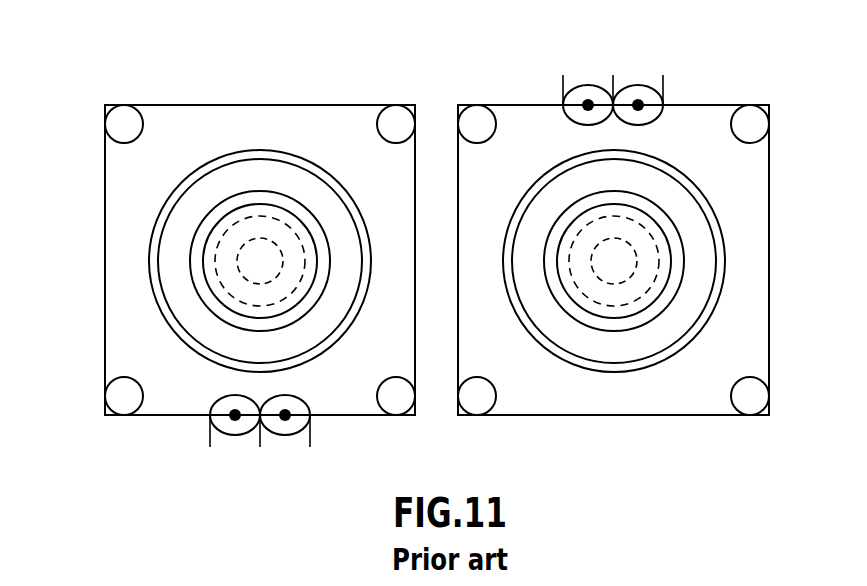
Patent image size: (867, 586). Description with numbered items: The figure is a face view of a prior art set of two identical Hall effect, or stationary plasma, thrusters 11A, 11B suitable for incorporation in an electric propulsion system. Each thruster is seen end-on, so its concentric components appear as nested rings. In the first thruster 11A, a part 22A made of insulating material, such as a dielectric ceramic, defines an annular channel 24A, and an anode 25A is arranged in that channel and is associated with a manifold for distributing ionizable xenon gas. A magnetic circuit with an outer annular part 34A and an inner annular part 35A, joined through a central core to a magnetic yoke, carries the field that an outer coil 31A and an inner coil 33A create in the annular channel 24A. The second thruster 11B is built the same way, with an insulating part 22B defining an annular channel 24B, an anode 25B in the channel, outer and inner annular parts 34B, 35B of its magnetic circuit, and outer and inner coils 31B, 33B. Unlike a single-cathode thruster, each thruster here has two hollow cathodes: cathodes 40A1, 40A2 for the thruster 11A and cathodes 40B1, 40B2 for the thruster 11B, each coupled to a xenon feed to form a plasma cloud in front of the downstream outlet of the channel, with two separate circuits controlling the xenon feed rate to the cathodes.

The Hall effect thruster 11A is at (226, 266).
The Hall effect thruster 11B is at (635, 251).
The part made of insulating material 22A is at (217, 212).
The part made of insulating material 22B is at (658, 308).
The annular channel 24A is at (283, 170).
The annular channel 24B is at (590, 348).
The anode 25A is at (180, 230).
The anode 25B is at (695, 230).
The outer coil 31A is at (125, 127).
The outer coil 31B is at (483, 123).
The inner coil 33A is at (215, 267).
The inner coil 33B is at (662, 267).
The outer annular part of magnetic circuit 34A is at (352, 137).
The outer annular part of magnetic circuit 34B is at (520, 137).
The inner annular part of magnetic circuit 35A is at (230, 247).
The inner annular part of magnetic circuit 35B is at (645, 247).
The cathode 40A1 is at (302, 423).
The cathode 40A2 is at (225, 423).
The cathode 40B1 is at (592, 92).
The cathode 40B2 is at (633, 92).